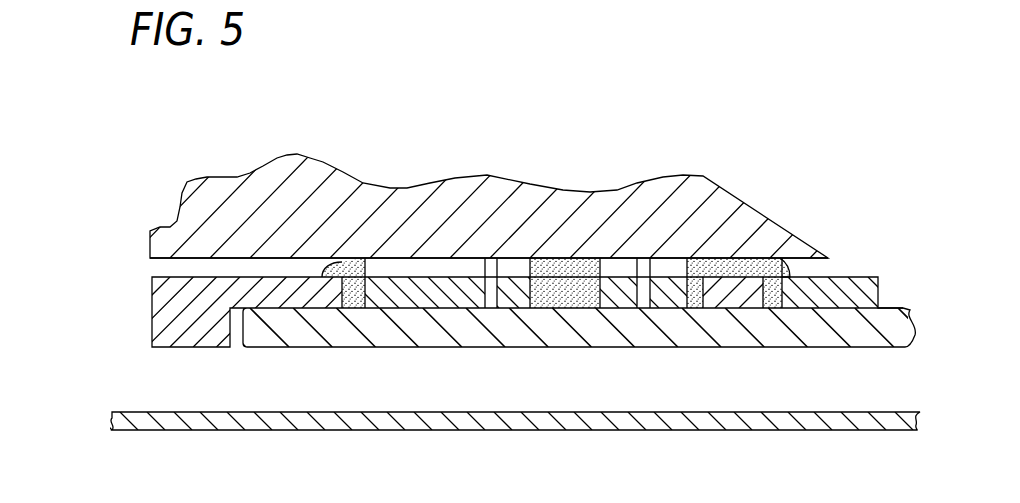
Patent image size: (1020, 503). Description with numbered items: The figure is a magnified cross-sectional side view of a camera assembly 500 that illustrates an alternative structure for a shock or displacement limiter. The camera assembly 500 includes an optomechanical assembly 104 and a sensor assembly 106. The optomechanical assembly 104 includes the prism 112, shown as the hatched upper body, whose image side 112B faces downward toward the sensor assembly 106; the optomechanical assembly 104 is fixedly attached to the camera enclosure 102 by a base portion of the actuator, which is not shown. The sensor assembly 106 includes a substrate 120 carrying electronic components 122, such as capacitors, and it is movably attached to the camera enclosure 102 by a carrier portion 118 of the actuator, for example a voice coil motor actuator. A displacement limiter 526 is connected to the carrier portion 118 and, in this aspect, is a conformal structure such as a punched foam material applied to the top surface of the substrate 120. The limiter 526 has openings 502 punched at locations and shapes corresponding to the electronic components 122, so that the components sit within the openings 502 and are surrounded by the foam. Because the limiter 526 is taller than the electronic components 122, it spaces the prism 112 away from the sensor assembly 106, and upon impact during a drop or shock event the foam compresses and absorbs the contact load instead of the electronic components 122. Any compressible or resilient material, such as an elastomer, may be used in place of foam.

The camera assembly 500 is at (738, 176).
The optomechanical assembly 104 is at (127, 252).
The prism 112 is at (404, 207).
The image side 112B is at (440, 258).
The openings 502 is at (468, 257).
The sensor assembly 106 is at (123, 360).
The carrier portion 118 is at (207, 328).
The substrate 120 is at (303, 335).
The electronic components 122 is at (512, 297).
The displacement limiter 526 is at (577, 297).
The camera enclosure 102 is at (477, 430).